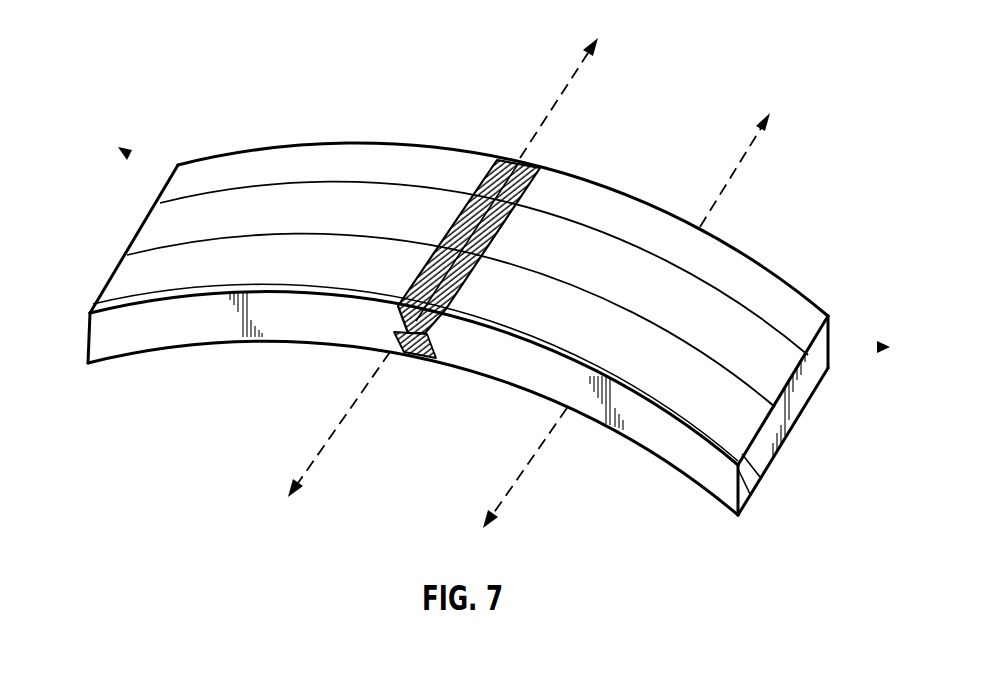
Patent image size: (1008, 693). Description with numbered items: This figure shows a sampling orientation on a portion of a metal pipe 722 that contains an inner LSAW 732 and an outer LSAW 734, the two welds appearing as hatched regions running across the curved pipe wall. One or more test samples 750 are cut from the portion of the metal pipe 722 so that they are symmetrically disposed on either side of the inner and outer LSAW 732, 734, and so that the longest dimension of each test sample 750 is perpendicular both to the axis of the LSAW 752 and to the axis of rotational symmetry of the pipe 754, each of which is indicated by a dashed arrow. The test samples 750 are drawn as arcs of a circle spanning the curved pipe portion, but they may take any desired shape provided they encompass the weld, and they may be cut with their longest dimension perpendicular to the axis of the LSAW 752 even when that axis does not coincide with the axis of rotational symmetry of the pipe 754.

The portion of the metal pipe 722 is at (576, 415).
The inner LSAW 732 is at (409, 352).
The outer LSAW 734 is at (518, 158).
The test sample 750 is at (263, 253).
The axis of the LSAW 752 is at (352, 402).
The axis of rotational symmetry of the pipe 754 is at (512, 488).